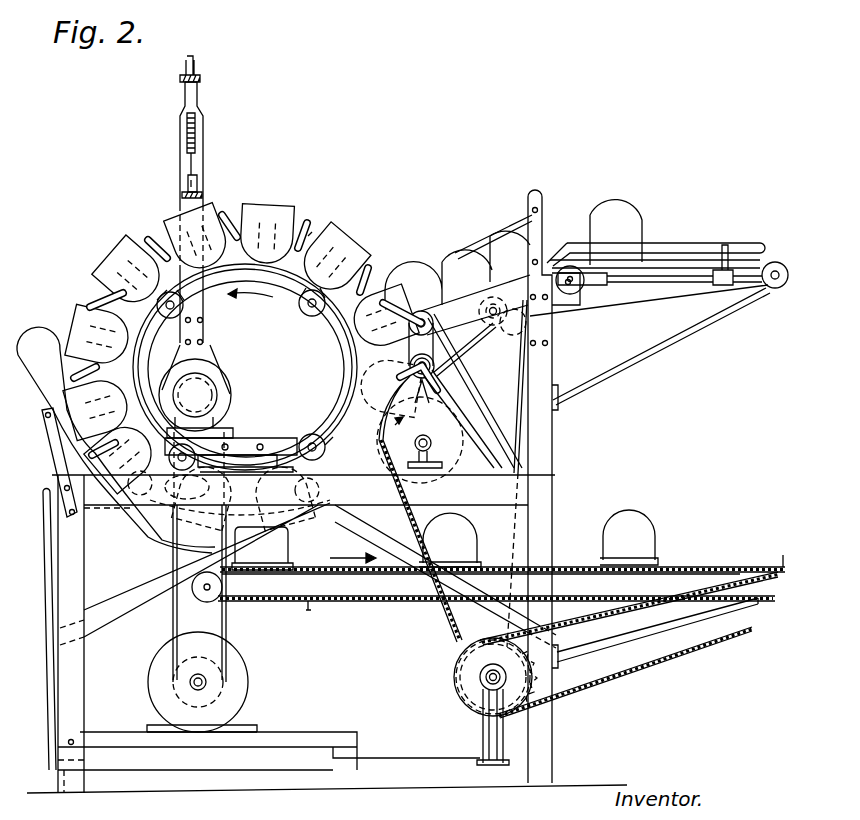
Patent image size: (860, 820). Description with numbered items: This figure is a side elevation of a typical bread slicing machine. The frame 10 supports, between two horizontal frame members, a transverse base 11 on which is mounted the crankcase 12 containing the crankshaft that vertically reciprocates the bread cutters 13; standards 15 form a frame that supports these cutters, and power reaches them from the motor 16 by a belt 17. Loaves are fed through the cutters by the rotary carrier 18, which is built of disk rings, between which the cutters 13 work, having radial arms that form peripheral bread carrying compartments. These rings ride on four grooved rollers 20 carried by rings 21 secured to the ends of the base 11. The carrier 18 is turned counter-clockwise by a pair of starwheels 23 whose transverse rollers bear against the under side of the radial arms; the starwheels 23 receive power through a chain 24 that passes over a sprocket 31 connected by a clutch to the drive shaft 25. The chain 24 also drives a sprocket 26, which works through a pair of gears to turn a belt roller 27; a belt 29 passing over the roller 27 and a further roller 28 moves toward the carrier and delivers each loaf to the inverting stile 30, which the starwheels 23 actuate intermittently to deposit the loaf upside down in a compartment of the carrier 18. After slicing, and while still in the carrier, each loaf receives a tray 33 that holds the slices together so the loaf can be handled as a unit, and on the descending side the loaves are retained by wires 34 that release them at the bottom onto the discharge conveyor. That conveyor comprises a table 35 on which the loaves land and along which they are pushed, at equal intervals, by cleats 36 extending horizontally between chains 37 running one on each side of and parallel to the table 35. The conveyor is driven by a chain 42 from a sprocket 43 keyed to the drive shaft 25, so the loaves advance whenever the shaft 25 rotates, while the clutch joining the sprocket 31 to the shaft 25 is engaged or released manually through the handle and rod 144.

The frame 10 is at (556, 463).
The transverse base 11 is at (247, 458).
The crankcase 12 is at (213, 377).
The bread cutters 13 is at (195, 183).
The standards 15 is at (205, 140).
The motor 16 is at (202, 682).
The belt 17 is at (226, 618).
The rotary carrier 18 is at (312, 230).
The grooved rollers 20 is at (312, 432).
The rings 21 is at (333, 353).
The starwheels 23 is at (413, 431).
The chain 24 is at (448, 360).
The drive shaft 25 is at (480, 678).
The sprocket 26 is at (512, 338).
The belt roller 27 is at (494, 326).
The roller 28 is at (768, 290).
The belt 29 is at (658, 262).
The inverting stile 30 is at (418, 305).
The sprocket 31 is at (457, 665).
The tray 33 is at (117, 255).
The wires 34 is at (57, 373).
The table 35 is at (345, 580).
The cleats 36 is at (240, 558).
The chains 37 is at (381, 602).
The chain 42 is at (648, 668).
The sprocket 43 is at (473, 692).
The handle and rod 144 is at (117, 757).